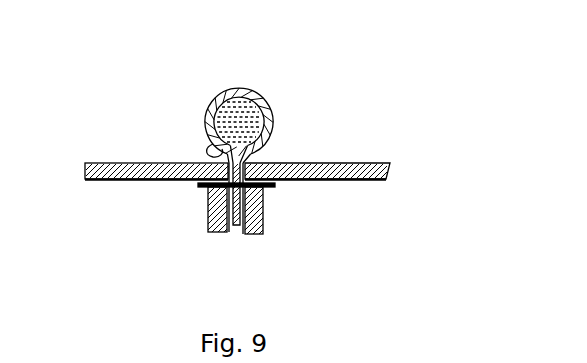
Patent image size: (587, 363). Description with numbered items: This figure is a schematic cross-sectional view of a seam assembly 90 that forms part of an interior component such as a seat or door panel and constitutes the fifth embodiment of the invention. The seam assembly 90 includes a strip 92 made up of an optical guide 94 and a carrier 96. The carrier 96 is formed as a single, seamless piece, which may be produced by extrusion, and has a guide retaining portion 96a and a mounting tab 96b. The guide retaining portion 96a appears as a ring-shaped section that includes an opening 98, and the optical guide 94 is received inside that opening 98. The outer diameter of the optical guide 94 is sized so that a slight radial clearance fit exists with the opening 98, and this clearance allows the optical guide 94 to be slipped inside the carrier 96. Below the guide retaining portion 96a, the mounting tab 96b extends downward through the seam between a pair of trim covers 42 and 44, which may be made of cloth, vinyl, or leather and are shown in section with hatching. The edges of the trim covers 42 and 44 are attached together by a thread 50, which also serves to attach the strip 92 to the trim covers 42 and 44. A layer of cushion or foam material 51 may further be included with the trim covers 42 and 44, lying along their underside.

The seam assembly 90 is at (300, 138).
The strip 92 is at (264, 131).
The optical guide 94 is at (258, 116).
The carrier 96 is at (241, 135).
The guide retaining portion 96a is at (270, 122).
The mounting tab 96b is at (236, 227).
The opening 98 is at (225, 110).
The trim cover 42 is at (122, 163).
The trim cover 44 is at (363, 163).
The thread 50 is at (265, 189).
The layer of cushion or foam material 51 is at (112, 180).